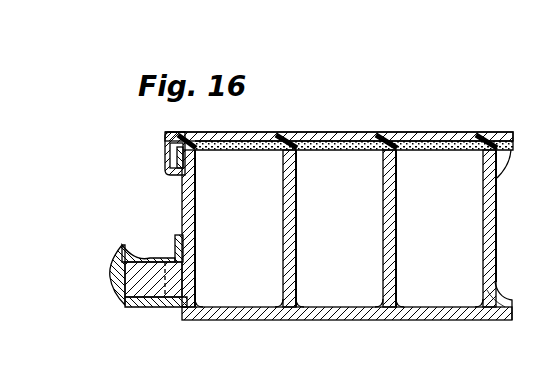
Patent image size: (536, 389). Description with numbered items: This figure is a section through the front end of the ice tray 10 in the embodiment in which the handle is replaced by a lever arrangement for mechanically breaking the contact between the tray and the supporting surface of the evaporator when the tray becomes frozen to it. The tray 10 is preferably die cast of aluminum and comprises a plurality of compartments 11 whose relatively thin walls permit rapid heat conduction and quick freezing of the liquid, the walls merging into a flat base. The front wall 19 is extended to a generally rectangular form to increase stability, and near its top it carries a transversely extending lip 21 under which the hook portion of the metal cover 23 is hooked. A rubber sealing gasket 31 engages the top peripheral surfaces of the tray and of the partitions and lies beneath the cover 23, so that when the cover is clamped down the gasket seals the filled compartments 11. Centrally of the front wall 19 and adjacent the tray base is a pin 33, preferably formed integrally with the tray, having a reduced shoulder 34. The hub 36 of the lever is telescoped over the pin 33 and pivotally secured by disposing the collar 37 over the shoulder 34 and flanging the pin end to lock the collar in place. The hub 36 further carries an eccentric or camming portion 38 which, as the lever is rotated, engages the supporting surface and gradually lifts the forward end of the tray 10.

The ice tray 10 is at (366, 321).
The compartment 11 is at (369, 221).
The front wall 19 is at (183, 186).
The lip 21 is at (172, 166).
The cover 23 is at (358, 133).
The sealing gasket 31 is at (237, 145).
The pin 33 is at (170, 290).
The reduced shoulder 34 is at (122, 292).
The hub 36 is at (146, 303).
The collar 37 is at (121, 251).
The eccentric portion 38 is at (177, 240).